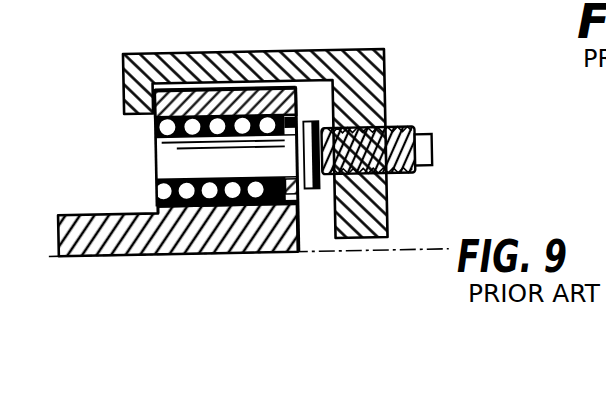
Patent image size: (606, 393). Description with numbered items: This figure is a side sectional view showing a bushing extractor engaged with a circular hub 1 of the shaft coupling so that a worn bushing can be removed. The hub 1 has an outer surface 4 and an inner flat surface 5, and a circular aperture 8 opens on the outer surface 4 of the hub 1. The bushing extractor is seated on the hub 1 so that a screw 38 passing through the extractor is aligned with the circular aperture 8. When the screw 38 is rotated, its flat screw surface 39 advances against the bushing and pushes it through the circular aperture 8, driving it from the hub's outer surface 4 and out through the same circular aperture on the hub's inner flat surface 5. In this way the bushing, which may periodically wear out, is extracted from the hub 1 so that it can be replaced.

The circular hub 1 is at (212, 248).
The outer surface 4 is at (261, 88).
The inner flat surface 5 is at (150, 211).
The circular aperture 8 is at (297, 195).
The screw 38 is at (423, 143).
The flat screw surface 39 is at (315, 122).